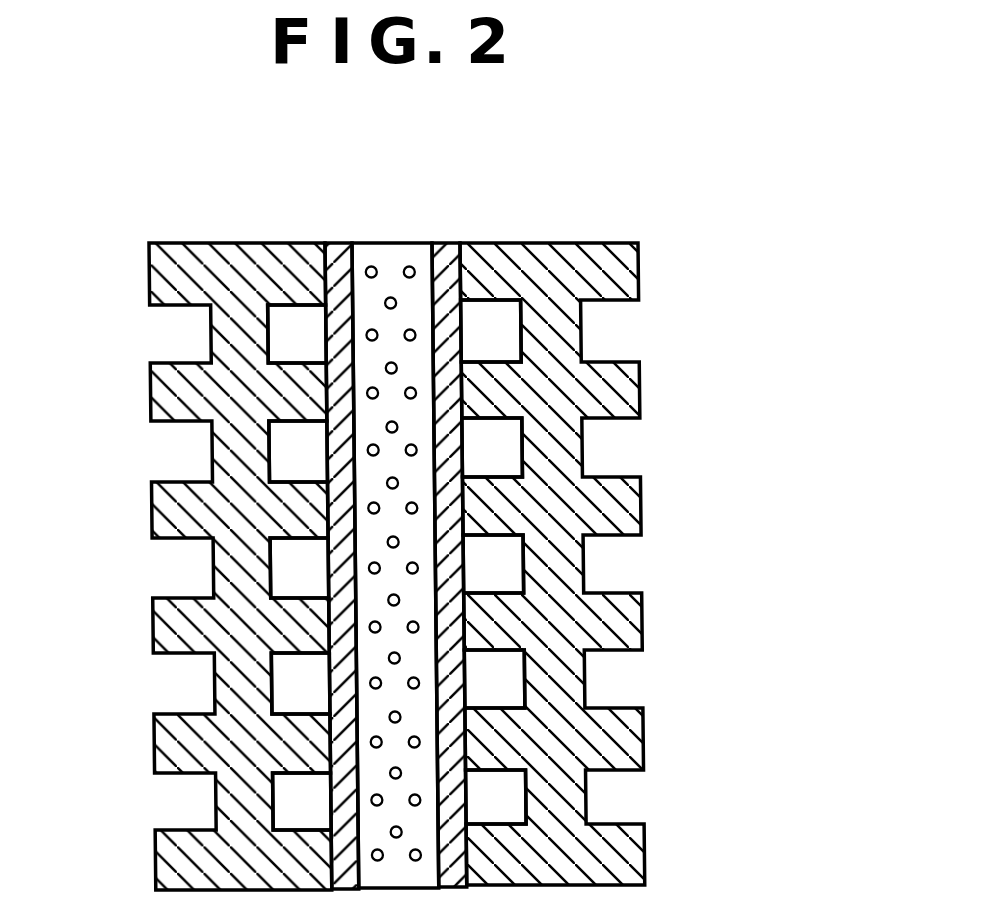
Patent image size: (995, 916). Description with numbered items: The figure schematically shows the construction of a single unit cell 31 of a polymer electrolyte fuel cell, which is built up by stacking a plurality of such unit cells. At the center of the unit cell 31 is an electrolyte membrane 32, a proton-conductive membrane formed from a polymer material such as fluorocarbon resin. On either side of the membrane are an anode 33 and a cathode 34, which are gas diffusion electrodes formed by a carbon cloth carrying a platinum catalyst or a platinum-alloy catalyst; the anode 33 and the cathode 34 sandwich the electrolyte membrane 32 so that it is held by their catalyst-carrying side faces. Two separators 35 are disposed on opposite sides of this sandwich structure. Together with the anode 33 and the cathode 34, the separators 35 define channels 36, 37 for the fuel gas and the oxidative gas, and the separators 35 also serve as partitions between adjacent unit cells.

The unit cell 31 is at (579, 114).
The electrolyte membrane 32 is at (397, 243).
The anode 33 is at (340, 243).
The cathode 34 is at (447, 243).
The separator 35 is at (192, 243).
The channel 36 is at (287, 458).
The channel 37 is at (502, 449).